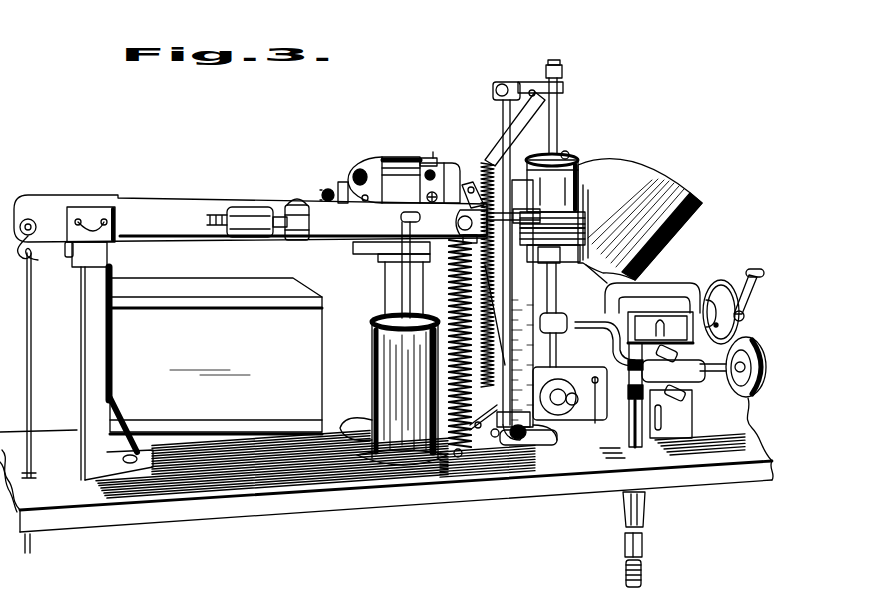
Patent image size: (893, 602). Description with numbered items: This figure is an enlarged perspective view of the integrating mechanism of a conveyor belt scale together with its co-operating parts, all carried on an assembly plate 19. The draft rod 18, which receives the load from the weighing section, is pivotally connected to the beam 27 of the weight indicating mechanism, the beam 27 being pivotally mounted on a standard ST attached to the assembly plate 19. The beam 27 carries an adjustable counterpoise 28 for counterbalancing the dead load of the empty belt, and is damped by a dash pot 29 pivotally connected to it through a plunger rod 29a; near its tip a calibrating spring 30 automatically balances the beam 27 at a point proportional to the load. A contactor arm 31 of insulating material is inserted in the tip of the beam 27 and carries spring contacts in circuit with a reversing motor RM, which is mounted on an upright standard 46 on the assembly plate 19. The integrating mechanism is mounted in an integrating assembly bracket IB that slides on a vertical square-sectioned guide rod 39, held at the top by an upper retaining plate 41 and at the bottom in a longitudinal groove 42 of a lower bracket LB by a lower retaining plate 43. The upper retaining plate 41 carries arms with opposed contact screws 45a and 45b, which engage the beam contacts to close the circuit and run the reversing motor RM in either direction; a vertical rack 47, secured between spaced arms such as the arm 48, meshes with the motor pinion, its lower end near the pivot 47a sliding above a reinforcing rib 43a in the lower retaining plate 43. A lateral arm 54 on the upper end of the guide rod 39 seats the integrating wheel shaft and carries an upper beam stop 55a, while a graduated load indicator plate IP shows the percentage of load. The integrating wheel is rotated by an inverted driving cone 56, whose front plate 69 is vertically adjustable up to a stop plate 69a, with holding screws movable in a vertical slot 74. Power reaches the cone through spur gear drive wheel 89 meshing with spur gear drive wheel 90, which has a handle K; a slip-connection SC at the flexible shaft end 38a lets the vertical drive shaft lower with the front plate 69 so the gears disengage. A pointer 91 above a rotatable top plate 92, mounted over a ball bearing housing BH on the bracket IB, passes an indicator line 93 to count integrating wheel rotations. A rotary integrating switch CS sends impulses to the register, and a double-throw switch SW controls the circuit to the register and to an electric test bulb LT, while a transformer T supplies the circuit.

The draft rod 18 is at (32, 543).
The assembly plate 19 is at (316, 504).
The beam 27 is at (162, 213).
The counterpoise 28 is at (245, 207).
The dash pot 29 is at (400, 353).
The plunger rod 29a is at (399, 279).
The calibrating spring 30 is at (456, 292).
The contactor arm 31 is at (431, 156).
The threaded end of screw 38a is at (643, 570).
The guide rod 39 is at (505, 110).
The upper retaining plate 41 is at (500, 250).
The longitudinal groove 42 is at (510, 440).
The lower retaining plate 43 is at (495, 435).
The reinforcing rib 43a is at (372, 393).
The contact screw 45a is at (533, 210).
The contact screw 45b is at (560, 222).
The upright standard 46 is at (383, 302).
The rack 47 is at (488, 165).
The pivot pin 47a is at (478, 425).
The arm 48 is at (487, 193).
The lateral arm 54 is at (547, 82).
The upper beam stop 55a is at (500, 143).
The driving cone 56 is at (643, 183).
The cone assembly front plate 69 is at (685, 387).
The stop plate 69a is at (667, 337).
The vertical slot 74 is at (662, 428).
The spur gear drive wheel 89 is at (746, 397).
The spur gear drive wheel 90 is at (718, 280).
The pointer 91 is at (566, 153).
The top plate 92 is at (543, 156).
The indicator line 93 is at (575, 164).
The ball bearing housing BH is at (585, 174).
The rotary integrating switch CS is at (638, 262).
The integrating assembly bracket IB is at (548, 273).
The load indicator plate IP is at (530, 423).
The handle K is at (755, 270).
The lower bracket LB is at (527, 450).
The electric test bulb LT is at (573, 408).
The reversing motor RM is at (388, 160).
The slip-connection SC is at (620, 523).
The standard ST is at (97, 345).
The double-throw switch SW is at (636, 450).
The transformer T is at (178, 323).